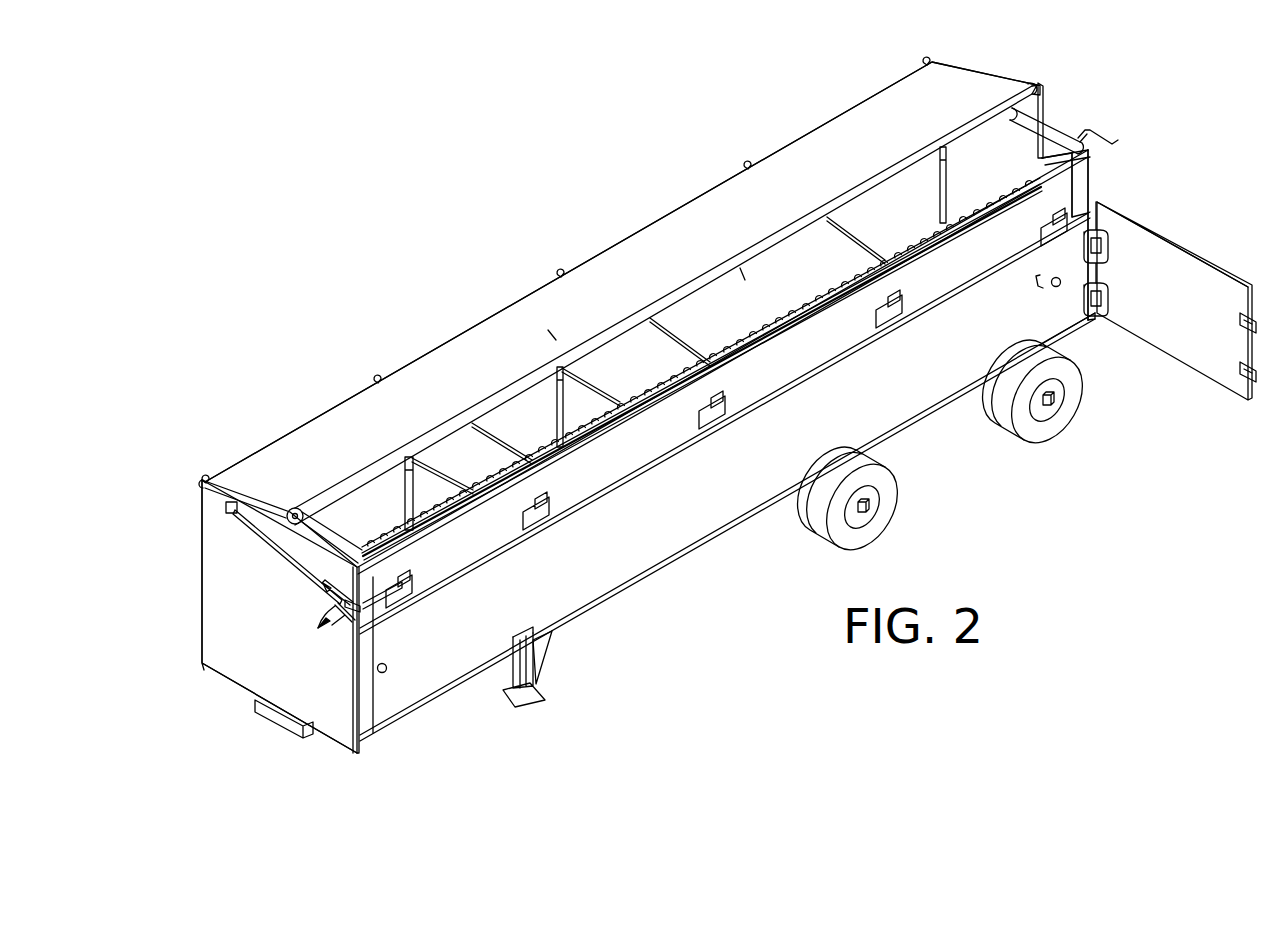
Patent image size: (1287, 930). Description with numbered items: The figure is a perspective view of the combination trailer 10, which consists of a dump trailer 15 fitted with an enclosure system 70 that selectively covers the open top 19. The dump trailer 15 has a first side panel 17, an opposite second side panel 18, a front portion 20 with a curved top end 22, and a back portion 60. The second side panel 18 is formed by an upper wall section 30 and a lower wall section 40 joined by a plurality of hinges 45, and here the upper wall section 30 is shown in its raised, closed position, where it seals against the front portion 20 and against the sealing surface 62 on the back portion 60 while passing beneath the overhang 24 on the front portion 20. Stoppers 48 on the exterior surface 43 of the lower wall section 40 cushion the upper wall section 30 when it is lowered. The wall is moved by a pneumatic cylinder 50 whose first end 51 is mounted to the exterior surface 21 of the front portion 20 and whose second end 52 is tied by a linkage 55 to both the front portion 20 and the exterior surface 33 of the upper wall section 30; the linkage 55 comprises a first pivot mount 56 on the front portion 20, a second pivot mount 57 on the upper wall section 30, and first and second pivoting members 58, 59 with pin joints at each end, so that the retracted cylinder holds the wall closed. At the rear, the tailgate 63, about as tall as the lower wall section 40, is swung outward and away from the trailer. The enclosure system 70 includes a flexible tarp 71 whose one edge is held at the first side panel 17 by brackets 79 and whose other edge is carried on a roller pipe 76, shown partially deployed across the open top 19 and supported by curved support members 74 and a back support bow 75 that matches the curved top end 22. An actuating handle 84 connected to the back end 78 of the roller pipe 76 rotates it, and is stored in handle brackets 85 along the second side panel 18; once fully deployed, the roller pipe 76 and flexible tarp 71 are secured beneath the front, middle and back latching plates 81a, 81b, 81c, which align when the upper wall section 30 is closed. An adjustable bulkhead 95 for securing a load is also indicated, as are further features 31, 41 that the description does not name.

The combination trailer 10 is at (248, 192).
The dump trailer 15 is at (1172, 92).
The first side panel 17 is at (742, 275).
The second side panel 18 is at (553, 603).
The open top 19 is at (1037, 112).
The front portion 20 is at (200, 620).
The exterior surface 21 is at (238, 657).
The curved top end 22 is at (292, 509).
The overhang 24 is at (386, 528).
The upper wall section 30 is at (585, 483).
The rear crossmember 31 is at (1065, 322).
The exterior surface 33 is at (660, 485).
The lower wall section 40 is at (700, 525).
The wheel 41 is at (1070, 386).
The exterior surface 43 is at (718, 500).
The hinges 45 is at (402, 613).
The stoppers 48 is at (386, 671).
The pneumatic cylinder 50 is at (203, 647).
The first end 51 is at (228, 509).
The second end 52 is at (277, 553).
The linkage 55 is at (323, 595).
The first pivot mount 56 is at (374, 742).
The second pivot mount 57 is at (390, 727).
The first pivoting member 58 is at (328, 612).
The second pivoting member 59 is at (320, 527).
The back portion 60 is at (1175, 300).
The sealing surface 62 is at (1080, 168).
The tailgate 63 is at (1200, 258).
The enclosure system 70 is at (938, 48).
The flexible tarp 71 is at (860, 125).
The support members 74 is at (474, 423).
The back support bow 75 is at (1043, 110).
The roller pipe 76 is at (1030, 92).
The back end 78 is at (1040, 86).
The brackets 79 is at (207, 476).
The front latching plate 81a is at (507, 637).
The middle latching plate 81b is at (552, 650).
The back latching plate 81c is at (1083, 162).
The actuating handle 84 is at (1097, 137).
The handle brackets 85 is at (1100, 290).
The adjustable bulkhead 95 is at (552, 335).